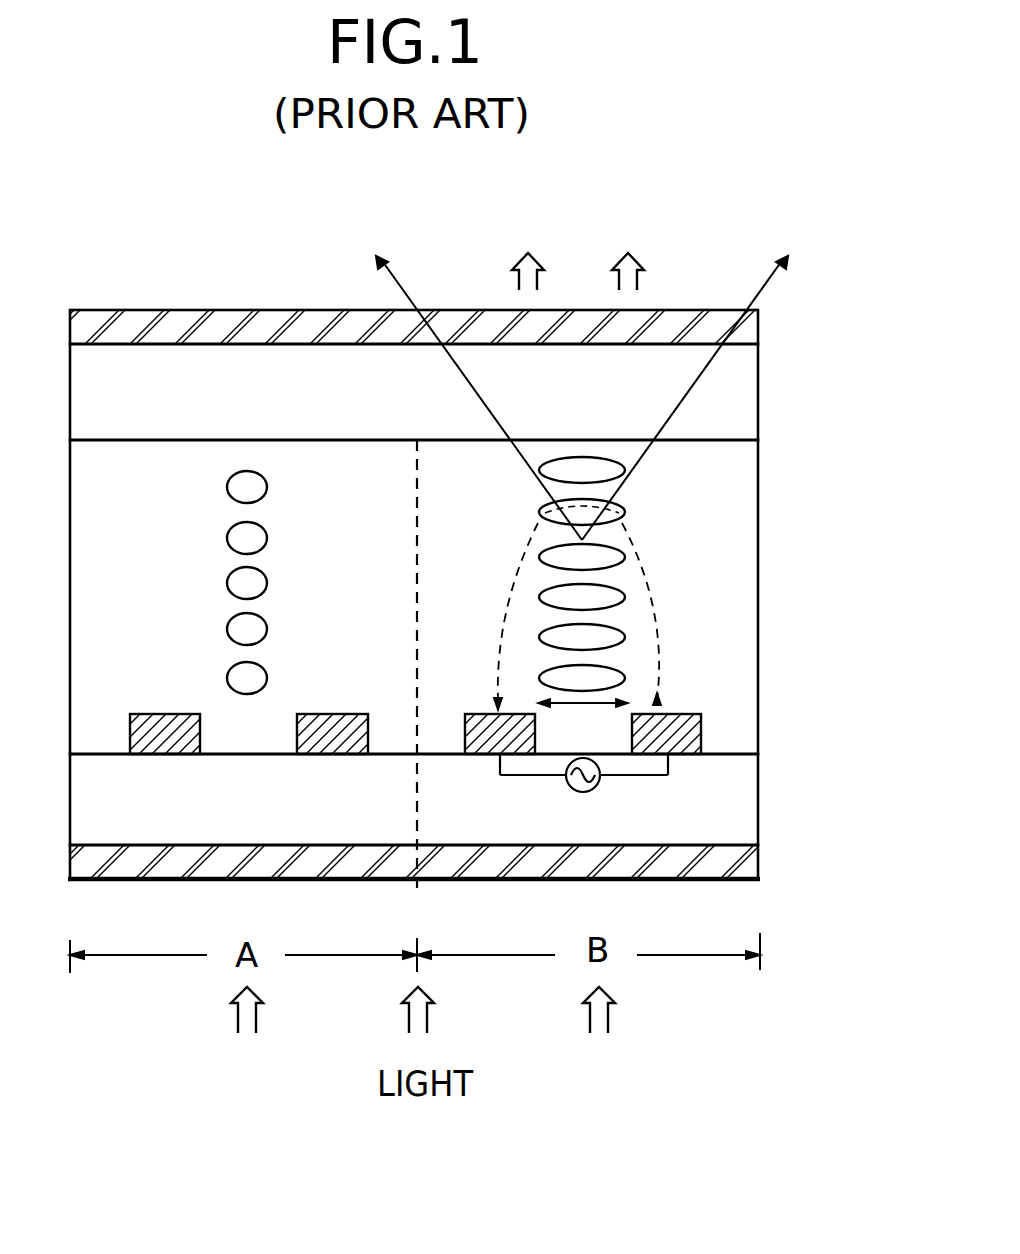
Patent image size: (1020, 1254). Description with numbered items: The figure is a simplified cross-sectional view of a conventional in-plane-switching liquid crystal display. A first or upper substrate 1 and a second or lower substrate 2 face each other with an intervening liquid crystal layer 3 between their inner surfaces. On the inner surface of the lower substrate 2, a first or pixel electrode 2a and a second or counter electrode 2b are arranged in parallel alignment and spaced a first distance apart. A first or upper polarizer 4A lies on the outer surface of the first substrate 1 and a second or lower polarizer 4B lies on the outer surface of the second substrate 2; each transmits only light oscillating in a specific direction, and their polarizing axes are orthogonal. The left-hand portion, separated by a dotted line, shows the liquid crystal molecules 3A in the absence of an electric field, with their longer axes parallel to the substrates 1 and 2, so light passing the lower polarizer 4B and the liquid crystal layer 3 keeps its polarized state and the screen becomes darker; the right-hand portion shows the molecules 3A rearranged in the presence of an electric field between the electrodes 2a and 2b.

The first substrate 1 is at (759, 393).
The second substrate 2 is at (759, 797).
The first electrode 2a is at (165, 752).
The second electrode 2b is at (332, 752).
The liquid crystal layer 3 is at (759, 597).
The liquid crystal molecules 3A is at (620, 470).
The first polarizer 4A is at (759, 325).
The second polarizer 4B is at (759, 858).